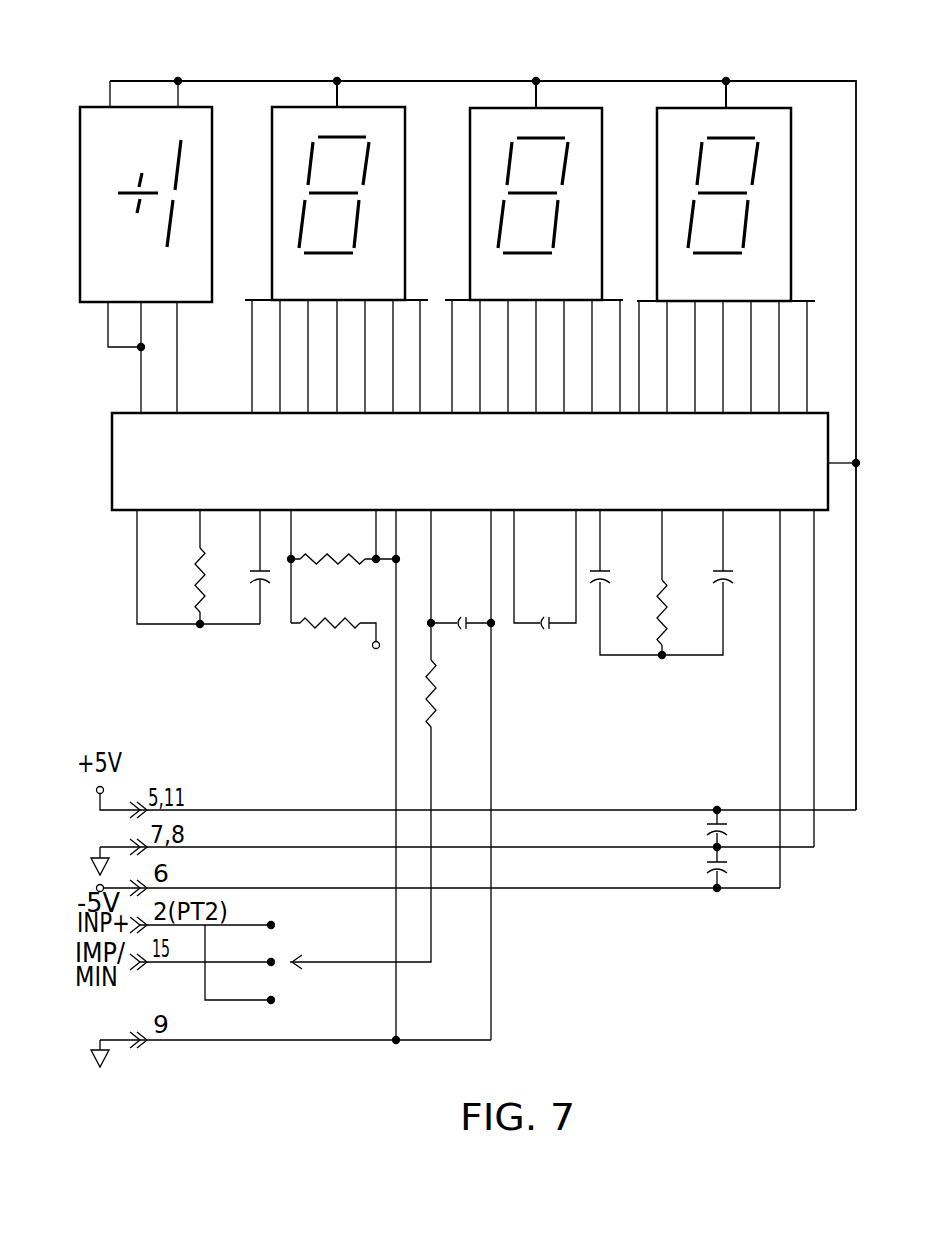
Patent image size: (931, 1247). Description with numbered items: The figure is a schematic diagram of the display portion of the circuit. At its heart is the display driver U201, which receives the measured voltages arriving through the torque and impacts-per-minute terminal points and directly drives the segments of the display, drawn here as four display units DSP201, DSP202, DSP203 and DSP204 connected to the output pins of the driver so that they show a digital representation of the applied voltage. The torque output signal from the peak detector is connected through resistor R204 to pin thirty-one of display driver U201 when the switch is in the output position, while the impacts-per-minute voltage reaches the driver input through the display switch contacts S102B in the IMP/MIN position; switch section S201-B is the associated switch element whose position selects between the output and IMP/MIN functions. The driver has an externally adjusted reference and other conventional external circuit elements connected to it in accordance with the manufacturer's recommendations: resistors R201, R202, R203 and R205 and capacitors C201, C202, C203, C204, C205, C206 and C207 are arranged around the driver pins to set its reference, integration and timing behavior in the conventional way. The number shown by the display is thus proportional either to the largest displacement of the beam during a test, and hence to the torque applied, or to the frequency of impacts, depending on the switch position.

The display DSP201 is at (146, 207).
The display DSP202 is at (331, 207).
The display DSP203 is at (529, 207).
The display DSP204 is at (718, 207).
The display driver U201 is at (479, 462).
The resistor R201 is at (175, 578).
The resistor R202 is at (332, 573).
The resistor R203 is at (333, 614).
The resistor R204 is at (458, 707).
The resistor R205 is at (689, 582).
The capacitor C201 is at (240, 567).
The capacitor C202 is at (461, 607).
The capacitor C203 is at (545, 569).
The capacitor C204 is at (623, 557).
The capacitor C205 is at (745, 569).
The capacitor C206 is at (684, 867).
The capacitor C207 is at (685, 828).
The switch S201-B is at (355, 683).
The display switch contacts S102B is at (292, 962).